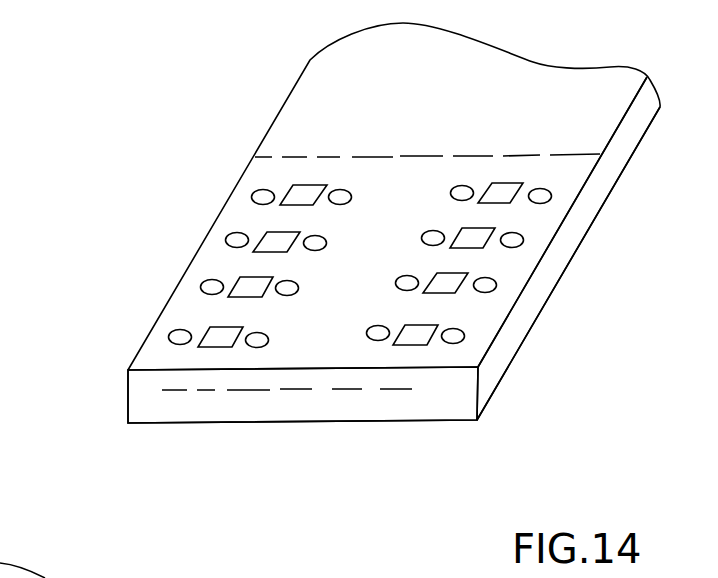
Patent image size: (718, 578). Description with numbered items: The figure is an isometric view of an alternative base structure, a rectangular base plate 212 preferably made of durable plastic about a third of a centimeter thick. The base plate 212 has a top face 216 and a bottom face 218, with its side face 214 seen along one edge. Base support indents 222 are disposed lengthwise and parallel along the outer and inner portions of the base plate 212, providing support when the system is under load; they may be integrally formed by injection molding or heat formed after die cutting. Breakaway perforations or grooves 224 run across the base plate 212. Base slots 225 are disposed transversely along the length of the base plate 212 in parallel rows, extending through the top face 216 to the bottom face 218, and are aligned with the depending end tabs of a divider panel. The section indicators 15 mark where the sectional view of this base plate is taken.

The base plate 212 is at (308, 147).
The side edge of substrate 214 is at (550, 267).
The top face 216 is at (555, 182).
The bottom face 218 is at (127, 403).
The base support indents 222 is at (170, 330).
The breakaway perforations or grooves 224 is at (420, 155).
The base slots 225 is at (217, 350).
The section line 15- 15 is at (343, 335).